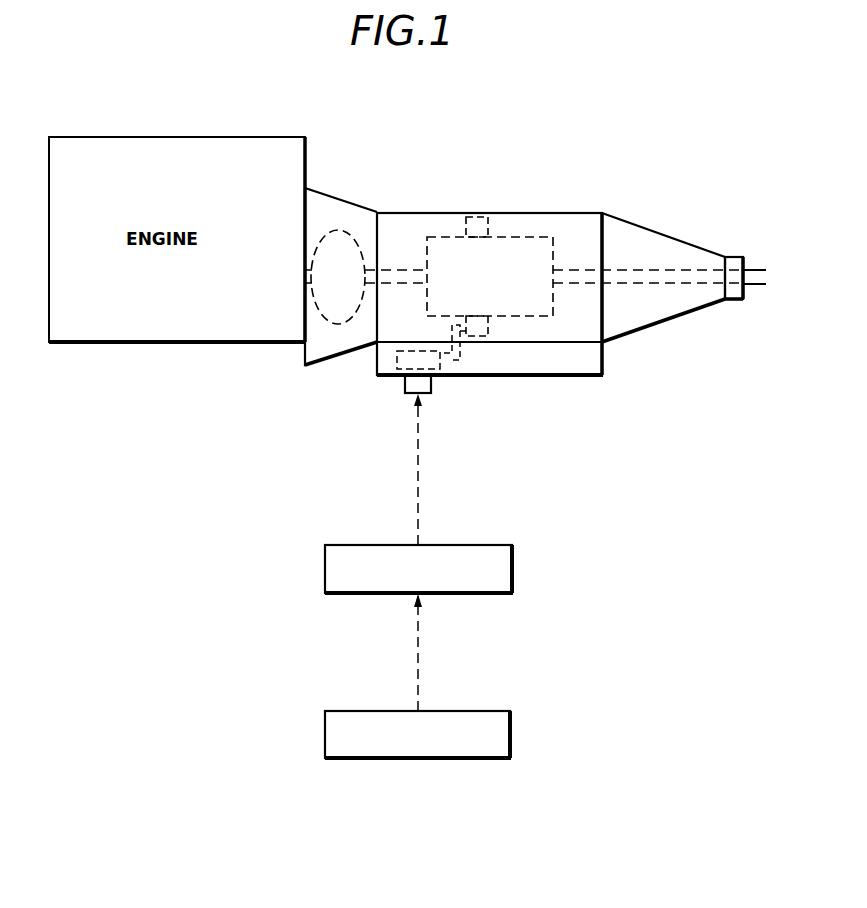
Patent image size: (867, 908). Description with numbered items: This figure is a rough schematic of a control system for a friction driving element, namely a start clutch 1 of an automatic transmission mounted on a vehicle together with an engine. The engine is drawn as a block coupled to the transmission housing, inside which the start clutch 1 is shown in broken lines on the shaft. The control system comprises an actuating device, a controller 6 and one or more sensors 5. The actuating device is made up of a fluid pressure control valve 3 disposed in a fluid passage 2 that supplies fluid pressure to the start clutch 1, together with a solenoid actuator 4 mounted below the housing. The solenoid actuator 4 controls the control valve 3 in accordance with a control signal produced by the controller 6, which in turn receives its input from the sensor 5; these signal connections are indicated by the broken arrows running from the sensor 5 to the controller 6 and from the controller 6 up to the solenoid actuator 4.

The start clutch 1 is at (476, 216).
The fluid passage 2 is at (457, 355).
The fluid pressure control valve 3 is at (397, 354).
The solenoid actuator 4 is at (429, 394).
The sensor 5 is at (511, 745).
The controller 6 is at (513, 581).